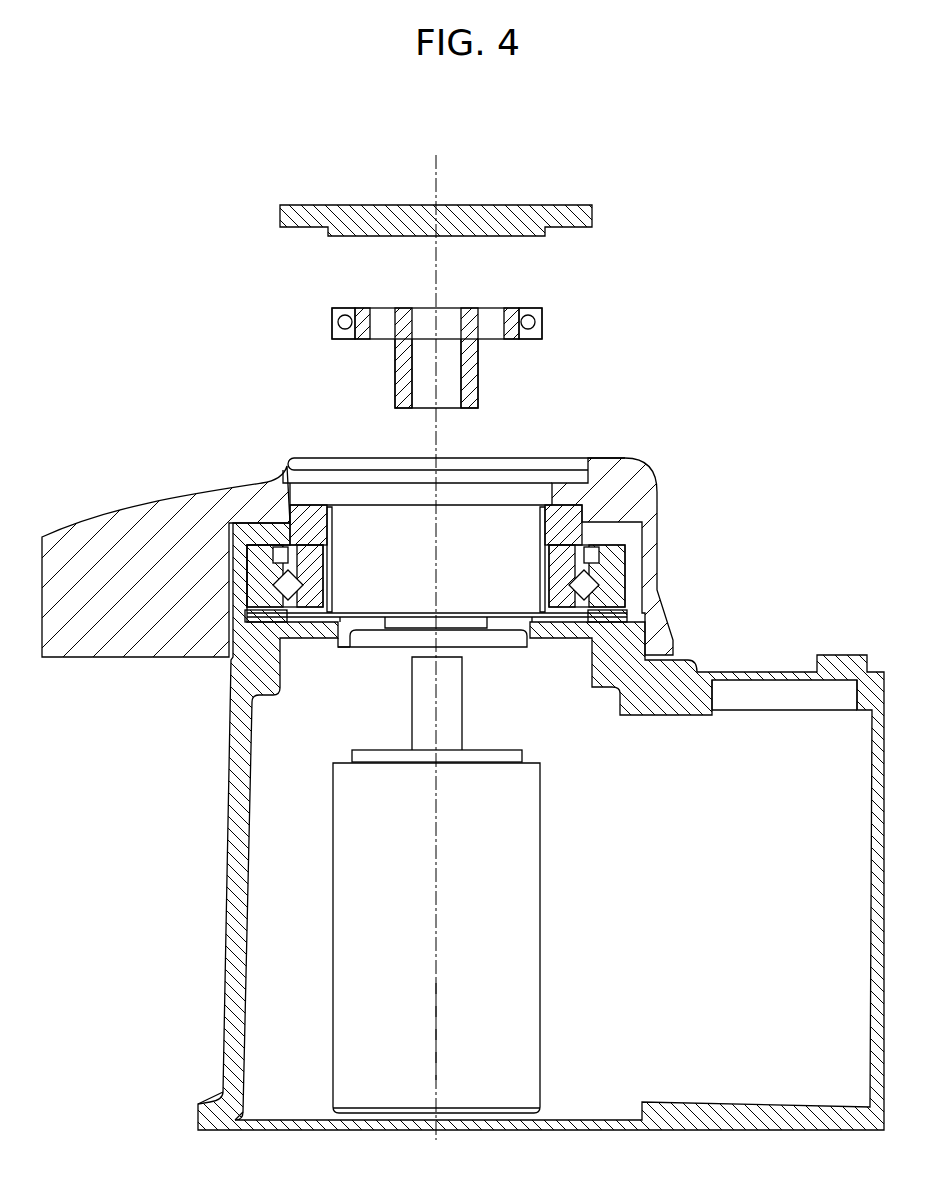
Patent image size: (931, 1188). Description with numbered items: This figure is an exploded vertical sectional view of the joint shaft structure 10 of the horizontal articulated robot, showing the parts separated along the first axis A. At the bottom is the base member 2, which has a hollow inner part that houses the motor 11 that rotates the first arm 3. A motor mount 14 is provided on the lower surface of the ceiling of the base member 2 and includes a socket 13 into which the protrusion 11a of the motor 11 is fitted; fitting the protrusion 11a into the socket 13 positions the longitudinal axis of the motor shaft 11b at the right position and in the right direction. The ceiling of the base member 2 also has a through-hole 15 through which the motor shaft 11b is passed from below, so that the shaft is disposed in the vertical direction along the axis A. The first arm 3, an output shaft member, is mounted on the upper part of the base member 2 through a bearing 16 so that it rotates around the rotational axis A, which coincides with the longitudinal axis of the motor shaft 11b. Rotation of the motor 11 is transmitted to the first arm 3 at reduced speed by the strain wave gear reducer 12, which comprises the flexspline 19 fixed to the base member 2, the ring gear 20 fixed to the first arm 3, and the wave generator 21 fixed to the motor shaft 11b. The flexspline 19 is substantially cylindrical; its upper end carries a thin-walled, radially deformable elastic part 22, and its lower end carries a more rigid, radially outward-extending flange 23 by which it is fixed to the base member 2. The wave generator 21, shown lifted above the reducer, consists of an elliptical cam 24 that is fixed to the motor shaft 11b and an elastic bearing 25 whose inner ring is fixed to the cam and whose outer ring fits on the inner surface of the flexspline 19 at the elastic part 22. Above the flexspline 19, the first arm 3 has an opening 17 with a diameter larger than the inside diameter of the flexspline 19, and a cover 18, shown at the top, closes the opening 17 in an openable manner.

The cover 18 is at (383, 205).
The wave generator 21 is at (318, 300).
The elliptical cam 24 is at (478, 365).
The elastic bearing 25 is at (345, 308).
The first arm 3 is at (75, 500).
The opening 17 is at (290, 458).
The joint shaft structure 10 is at (725, 405).
The ring gear 20 is at (556, 505).
The strain wave gear reducer 12 is at (238, 520).
The base member 2 is at (213, 862).
The bearing 16 is at (247, 577).
The flexspline 19 is at (350, 585).
The elastic part 22 is at (541, 572).
The through-hole 15 is at (470, 612).
The flange 23 is at (624, 634).
The motor mount 14 is at (379, 660).
The socket 13 is at (363, 648).
The motor 11 is at (565, 933).
The protrusion 11a is at (524, 755).
The motor shaft 11b is at (463, 712).
The first axis A is at (445, 1030).